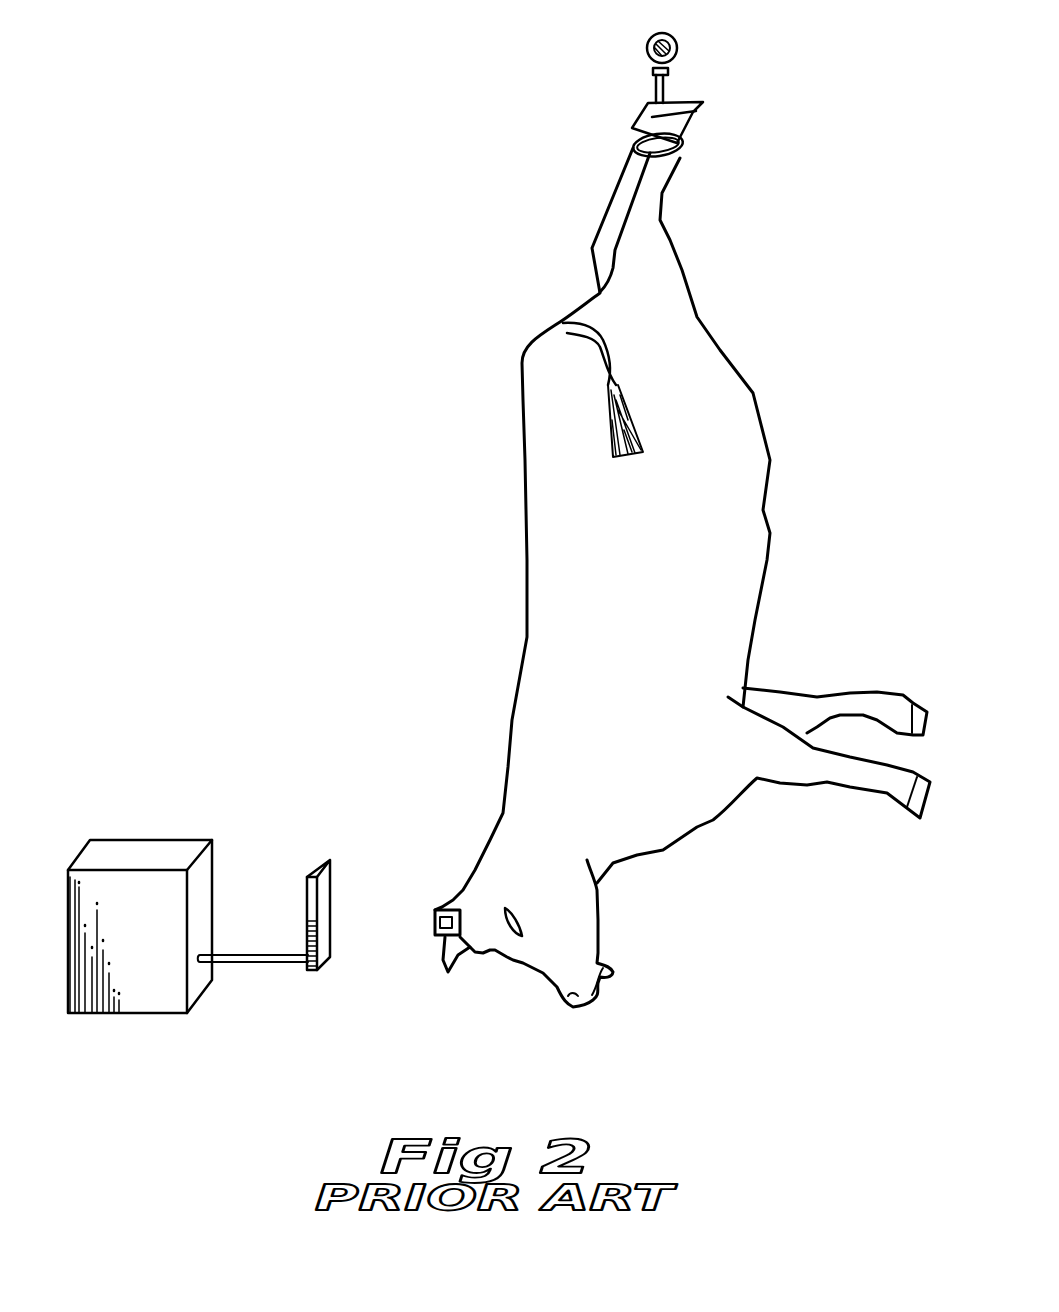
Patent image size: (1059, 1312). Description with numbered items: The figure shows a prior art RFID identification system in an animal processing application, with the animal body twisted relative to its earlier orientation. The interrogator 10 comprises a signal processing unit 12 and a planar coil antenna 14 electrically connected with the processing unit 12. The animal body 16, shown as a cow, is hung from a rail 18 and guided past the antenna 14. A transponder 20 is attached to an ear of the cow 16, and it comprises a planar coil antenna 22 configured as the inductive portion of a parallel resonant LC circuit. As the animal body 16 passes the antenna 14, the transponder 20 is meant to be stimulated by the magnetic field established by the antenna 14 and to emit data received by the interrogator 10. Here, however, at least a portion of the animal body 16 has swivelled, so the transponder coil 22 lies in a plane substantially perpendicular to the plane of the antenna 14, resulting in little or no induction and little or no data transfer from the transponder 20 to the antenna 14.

The interrogator 10 is at (148, 791).
The signal processing unit 12 is at (155, 988).
The planar coil antenna 14 is at (333, 888).
The animal body 16 is at (720, 555).
The rail 18 is at (675, 36).
The transponder 20 is at (441, 938).
The planar coil antenna 22 is at (432, 915).